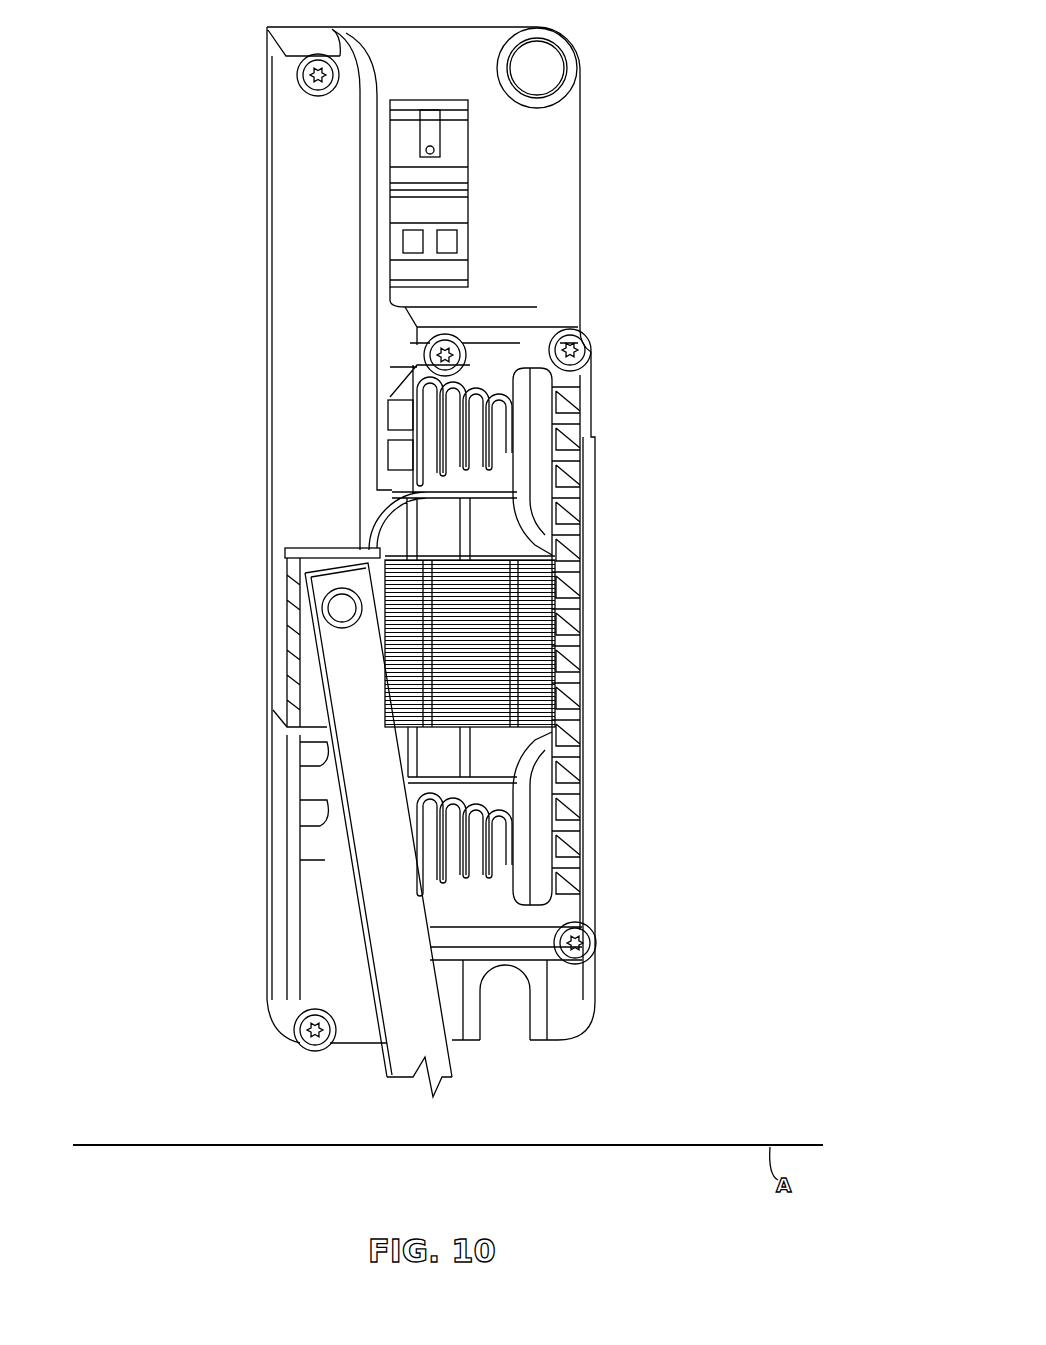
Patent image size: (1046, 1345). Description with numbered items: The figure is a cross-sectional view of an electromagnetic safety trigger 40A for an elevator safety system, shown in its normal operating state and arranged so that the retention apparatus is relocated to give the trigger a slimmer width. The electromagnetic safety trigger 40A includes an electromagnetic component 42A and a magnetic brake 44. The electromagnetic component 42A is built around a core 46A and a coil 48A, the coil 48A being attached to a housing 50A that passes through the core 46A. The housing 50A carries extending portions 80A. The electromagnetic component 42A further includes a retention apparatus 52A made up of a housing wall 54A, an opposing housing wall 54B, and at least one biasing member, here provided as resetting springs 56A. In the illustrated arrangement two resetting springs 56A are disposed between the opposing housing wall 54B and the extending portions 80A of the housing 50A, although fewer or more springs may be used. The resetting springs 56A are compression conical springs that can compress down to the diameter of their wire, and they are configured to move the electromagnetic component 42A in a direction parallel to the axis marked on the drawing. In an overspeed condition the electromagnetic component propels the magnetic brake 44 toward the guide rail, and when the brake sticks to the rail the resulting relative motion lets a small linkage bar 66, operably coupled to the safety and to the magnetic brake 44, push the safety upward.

The electromagnetic safety trigger 40A is at (712, 72).
The electromagnetic component 42A is at (617, 640).
The magnetic brake 44 is at (318, 708).
The core 46A is at (538, 695).
The coil 48A is at (440, 528).
The housing 50A is at (540, 505).
The retention apparatus 52A is at (490, 306).
The housing wall 54A is at (593, 576).
The opposing housing wall 54B is at (385, 438).
The resetting spring 56A is at (488, 388).
The linkage bar 66 is at (380, 1066).
The extending portions 80A is at (540, 408).